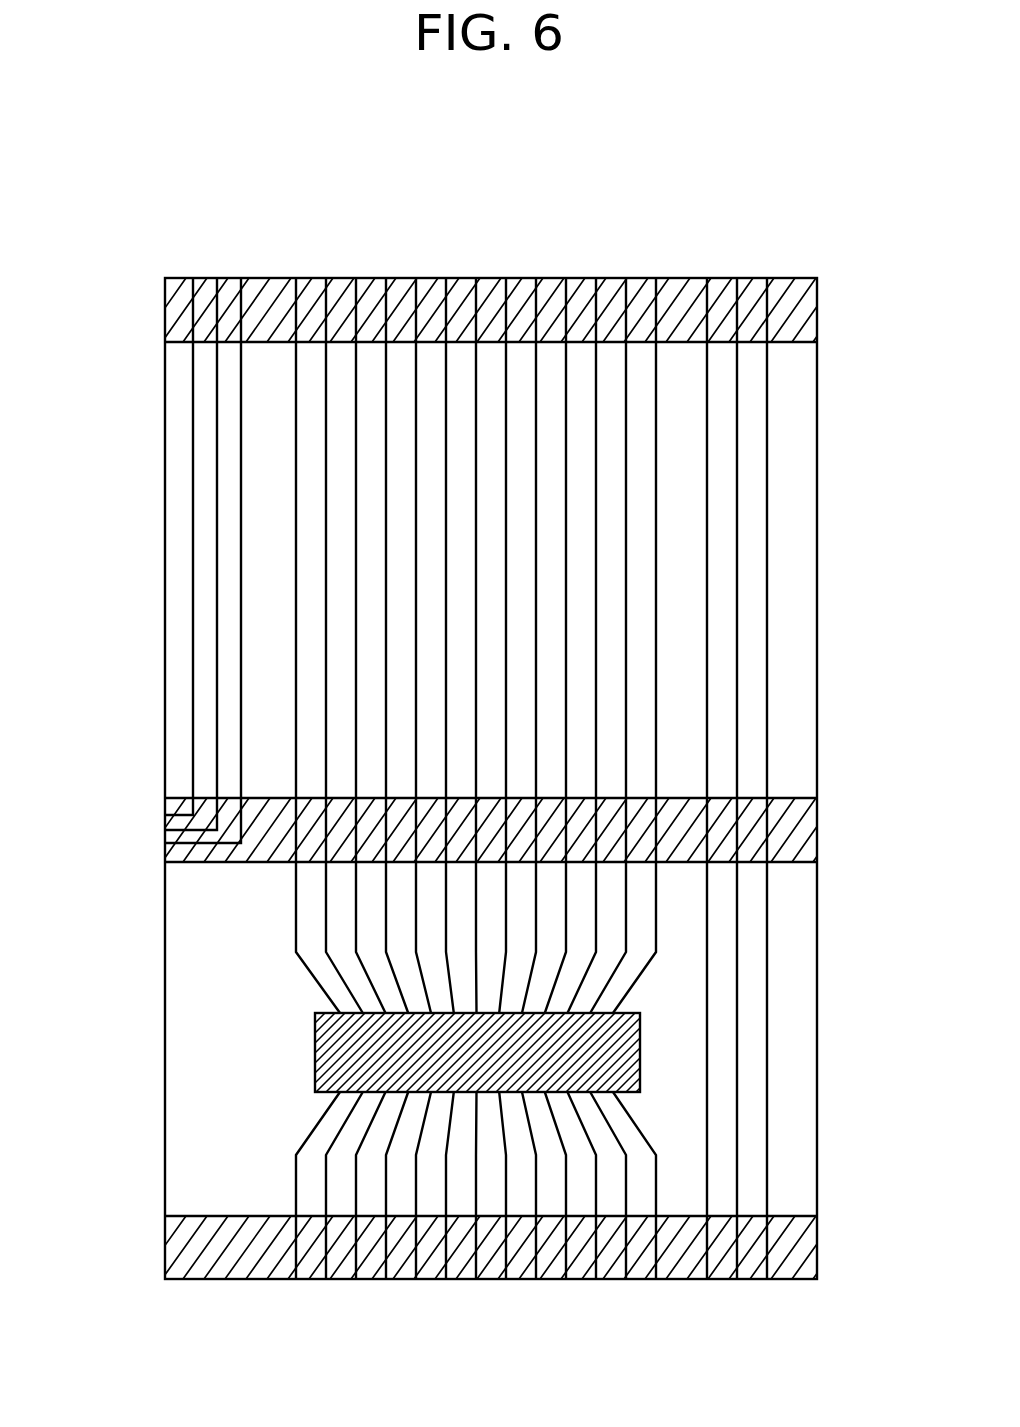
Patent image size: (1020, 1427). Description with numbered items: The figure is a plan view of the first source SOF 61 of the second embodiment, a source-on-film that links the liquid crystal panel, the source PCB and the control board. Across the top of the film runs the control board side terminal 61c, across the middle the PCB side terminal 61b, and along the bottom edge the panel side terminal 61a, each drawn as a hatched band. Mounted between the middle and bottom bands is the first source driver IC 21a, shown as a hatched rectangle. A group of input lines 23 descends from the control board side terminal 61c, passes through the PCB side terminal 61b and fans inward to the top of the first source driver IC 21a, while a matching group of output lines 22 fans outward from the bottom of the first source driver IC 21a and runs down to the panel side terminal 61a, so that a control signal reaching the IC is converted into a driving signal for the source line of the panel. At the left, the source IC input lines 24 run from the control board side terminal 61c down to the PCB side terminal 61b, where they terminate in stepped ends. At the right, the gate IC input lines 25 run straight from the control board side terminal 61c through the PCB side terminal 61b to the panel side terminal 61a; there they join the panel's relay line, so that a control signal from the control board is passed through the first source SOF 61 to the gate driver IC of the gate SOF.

The first source SOF 61 is at (195, 1120).
The panel side terminal 61a is at (193, 1262).
The PCB side terminal 61b is at (203, 853).
The control board side terminal 61c is at (681, 298).
The first source driver IC 21a is at (315, 1042).
The output line 22 is at (292, 1292).
The input line 23 is at (288, 262).
The source IC input line 24 is at (253, 262).
The gate IC input line 25 is at (776, 262).